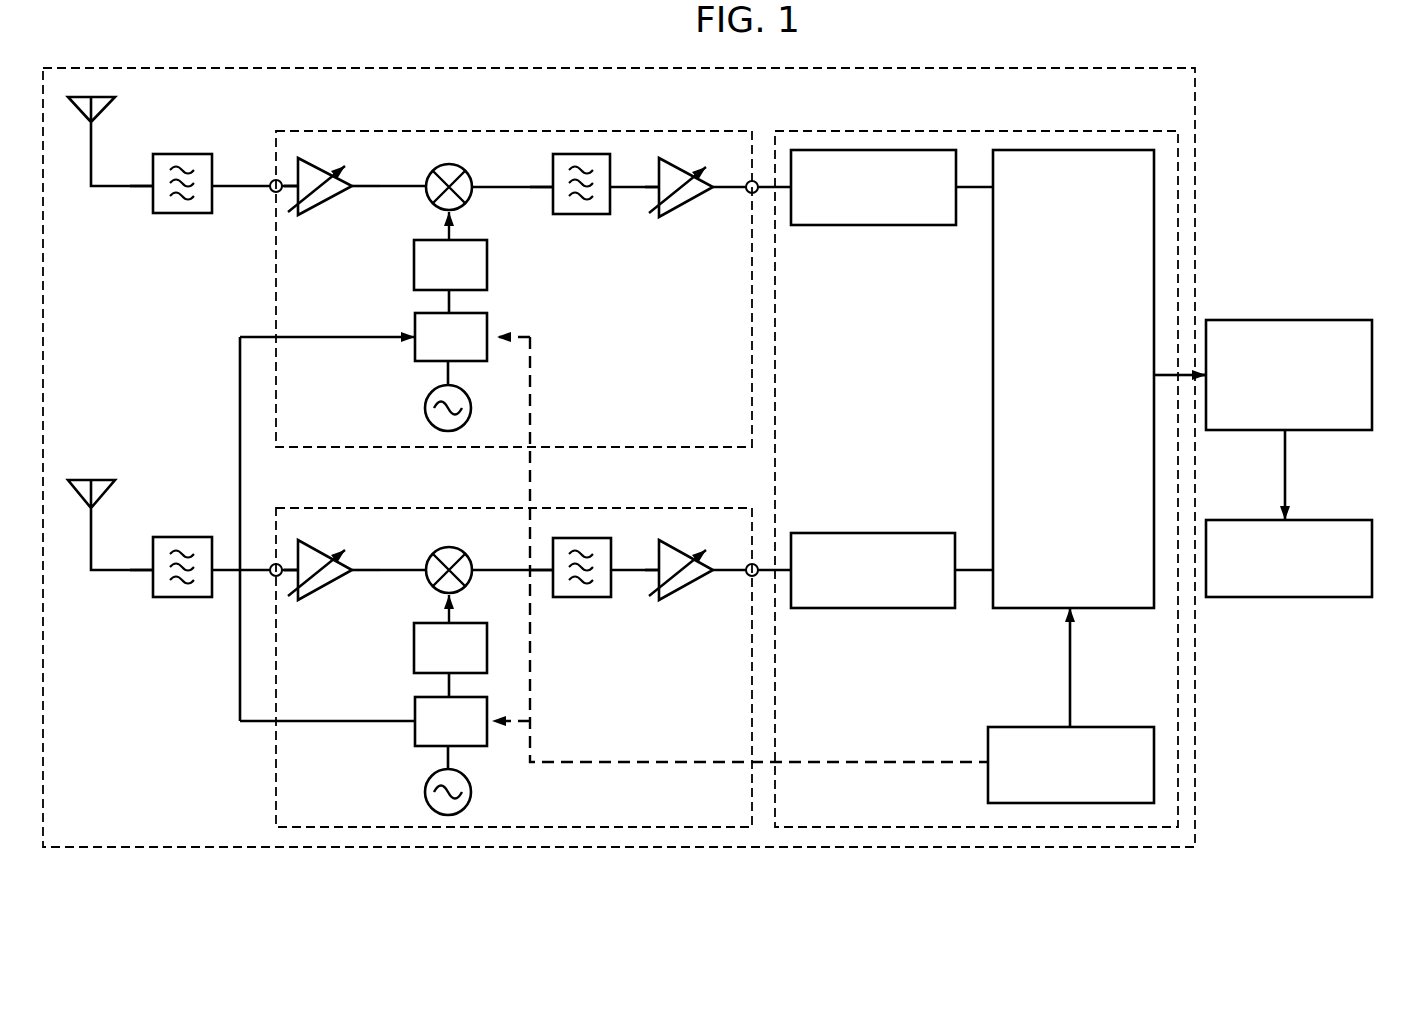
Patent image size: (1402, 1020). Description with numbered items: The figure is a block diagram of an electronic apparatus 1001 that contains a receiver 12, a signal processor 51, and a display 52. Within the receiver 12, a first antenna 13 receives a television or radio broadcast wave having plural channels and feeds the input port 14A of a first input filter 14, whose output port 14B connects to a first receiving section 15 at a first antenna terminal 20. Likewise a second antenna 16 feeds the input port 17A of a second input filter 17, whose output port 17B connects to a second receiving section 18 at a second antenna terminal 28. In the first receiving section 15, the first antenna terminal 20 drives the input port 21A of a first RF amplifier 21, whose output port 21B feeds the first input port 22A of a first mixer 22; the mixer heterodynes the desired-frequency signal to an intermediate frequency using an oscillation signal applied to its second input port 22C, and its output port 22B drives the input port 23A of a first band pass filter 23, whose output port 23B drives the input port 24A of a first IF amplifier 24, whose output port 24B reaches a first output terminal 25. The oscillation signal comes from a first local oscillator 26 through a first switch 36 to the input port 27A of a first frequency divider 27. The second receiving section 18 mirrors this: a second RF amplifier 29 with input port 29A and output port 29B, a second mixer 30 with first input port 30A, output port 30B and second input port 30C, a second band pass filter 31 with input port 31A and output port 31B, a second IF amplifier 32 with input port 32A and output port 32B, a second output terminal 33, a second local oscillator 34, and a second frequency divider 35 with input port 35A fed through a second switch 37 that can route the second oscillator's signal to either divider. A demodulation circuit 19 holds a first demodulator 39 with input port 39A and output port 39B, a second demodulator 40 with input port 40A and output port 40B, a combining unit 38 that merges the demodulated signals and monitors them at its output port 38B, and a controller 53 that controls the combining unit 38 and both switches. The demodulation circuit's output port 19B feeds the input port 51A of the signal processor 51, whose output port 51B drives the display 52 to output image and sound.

The electronic apparatus 1001 is at (1260, 142).
The receiver 12 is at (1193, 208).
The first antenna 13 is at (82, 117).
The first input filter 14 is at (182, 158).
The input port 14A is at (152, 190).
The output port 14B is at (212, 193).
The first receiving section 15 is at (752, 362).
The second antenna 16 is at (82, 498).
The second input filter 17 is at (182, 542).
The input port 17A is at (152, 572).
The output port 17B is at (208, 597).
The second receiving section 18 is at (752, 717).
The demodulation circuit 19 is at (1033, 131).
The output port 19B is at (1183, 375).
The first antenna terminal 20 is at (272, 178).
The first RF amplifier 21 is at (316, 162).
The input port 21A is at (298, 212).
The output port 21B is at (350, 190).
The first mixer 22 is at (443, 170).
The first input port 22A is at (428, 182).
The output port 22B is at (471, 183).
The second input port 22C is at (453, 212).
The first band pass filter 23 is at (573, 153).
The input port 23A is at (545, 183).
The output port 23B is at (613, 182).
The first intermediate-frequency amplifier 24 is at (680, 160).
The input port 24A is at (655, 188).
The output port 24B is at (712, 192).
The first output terminal 25 is at (753, 178).
The first local oscillator 26 is at (470, 400).
The first frequency divider 27 is at (487, 257).
The input port 27A is at (427, 290).
The second antenna terminal 28 is at (273, 563).
The second RF amplifier 29 is at (322, 557).
The input port 29A is at (297, 600).
The output port 29B is at (352, 580).
The second mixer 30 is at (452, 547).
The first input port 30A is at (420, 557).
The output port 30B is at (477, 567).
The second input port 30C is at (455, 600).
The second band pass filter 31 is at (580, 538).
The input port 31A is at (548, 570).
The output port 31B is at (614, 570).
The second IF amplifier 32 is at (680, 540).
The input port 32A is at (657, 582).
The output port 32B is at (713, 577).
The second output terminal 33 is at (757, 563).
The second local oscillator 34 is at (471, 785).
The second frequency divider 35 is at (487, 655).
The input port 35A is at (427, 673).
The first switch 36 is at (488, 323).
The second switch 37 is at (485, 705).
The combining unit 38 is at (1125, 150).
The output port 38B is at (1160, 377).
The first demodulator 39 is at (860, 150).
The input port 39A is at (787, 195).
The output port 39B is at (958, 192).
The second demodulator 40 is at (863, 533).
The input port 40A is at (787, 610).
The output port 40B is at (959, 610).
The signal processor 51 is at (1302, 320).
The input port 51A is at (1203, 372).
The output port 51B is at (1293, 433).
The display 52 is at (1310, 518).
The controller 53 is at (1090, 727).